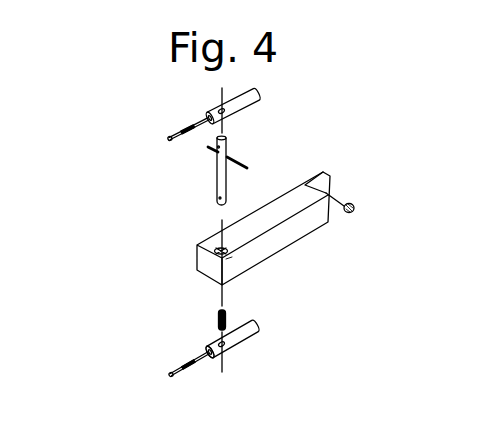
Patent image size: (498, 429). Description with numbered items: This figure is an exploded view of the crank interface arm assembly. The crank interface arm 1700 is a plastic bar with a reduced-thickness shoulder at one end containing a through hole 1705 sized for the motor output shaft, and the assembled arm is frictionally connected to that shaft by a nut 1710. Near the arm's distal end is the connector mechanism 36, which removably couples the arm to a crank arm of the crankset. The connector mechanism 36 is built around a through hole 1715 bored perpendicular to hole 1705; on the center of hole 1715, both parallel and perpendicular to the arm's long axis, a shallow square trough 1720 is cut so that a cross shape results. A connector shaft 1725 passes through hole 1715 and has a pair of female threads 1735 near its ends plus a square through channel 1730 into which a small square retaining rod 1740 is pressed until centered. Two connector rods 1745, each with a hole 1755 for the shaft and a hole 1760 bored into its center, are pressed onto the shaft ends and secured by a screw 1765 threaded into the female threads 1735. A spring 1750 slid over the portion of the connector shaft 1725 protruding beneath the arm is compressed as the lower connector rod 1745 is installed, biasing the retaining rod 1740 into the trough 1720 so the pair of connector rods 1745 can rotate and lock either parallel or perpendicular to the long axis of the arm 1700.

The connector mechanism 36 is at (165, 113).
The crank interface arm 1700 is at (300, 238).
The through hole 1705 is at (327, 173).
The nut 1710 is at (355, 205).
The through hole 1715 is at (238, 251).
The square trough 1720 is at (213, 249).
The connector shaft 1725 is at (227, 131).
The square through channel 1730 is at (216, 141).
The female threads 1735 is at (216, 201).
The retaining rod 1740 is at (243, 164).
The connector rod 1745 is at (267, 321).
The spring 1750 is at (218, 314).
The hole 1755 is at (230, 342).
The hole 1760 is at (207, 351).
The screw 1765 is at (192, 366).